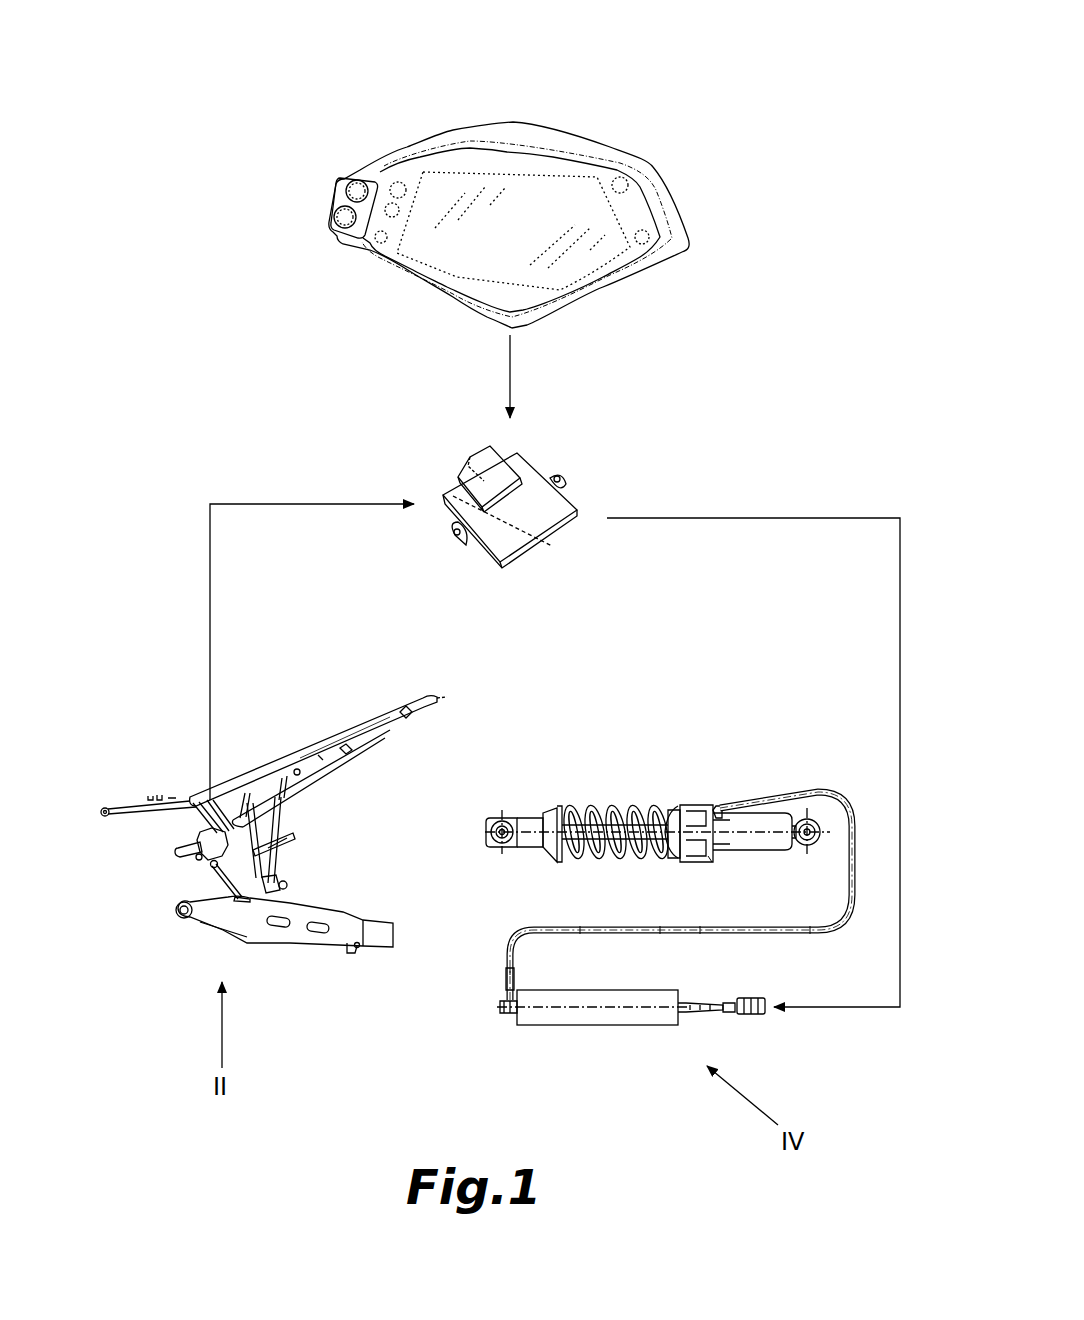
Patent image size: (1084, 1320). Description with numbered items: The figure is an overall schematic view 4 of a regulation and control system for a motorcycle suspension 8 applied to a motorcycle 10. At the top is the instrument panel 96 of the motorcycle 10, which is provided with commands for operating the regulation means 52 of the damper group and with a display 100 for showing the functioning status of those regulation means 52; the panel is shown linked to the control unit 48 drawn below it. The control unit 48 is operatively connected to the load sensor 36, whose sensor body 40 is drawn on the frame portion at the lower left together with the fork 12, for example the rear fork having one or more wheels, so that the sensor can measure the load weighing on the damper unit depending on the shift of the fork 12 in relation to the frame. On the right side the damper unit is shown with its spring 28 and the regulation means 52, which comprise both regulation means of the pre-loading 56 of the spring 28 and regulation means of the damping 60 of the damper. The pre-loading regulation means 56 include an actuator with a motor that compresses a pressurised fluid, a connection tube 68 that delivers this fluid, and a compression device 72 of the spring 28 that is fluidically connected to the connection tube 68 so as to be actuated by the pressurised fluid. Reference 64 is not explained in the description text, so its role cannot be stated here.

The overall schematic view 4 is at (602, 110).
The instrument panel 96 is at (412, 144).
The display 100 is at (567, 205).
The control unit 48 is at (530, 505).
The motorcycle suspension 8 is at (252, 736).
The motorcycle 10 is at (266, 878).
The fork 12 is at (293, 940).
The load sensor 36 is at (190, 864).
The sensor body 40 is at (188, 851).
The pre-loading regulation means 56 is at (695, 790).
The damping regulation means 60 is at (657, 780).
The spring 28 is at (566, 804).
The connection tube 68 is at (512, 926).
The regulation means 52 is at (598, 1034).
The actuator unit 64 is at (631, 1007).
The compression device 72 is at (708, 864).